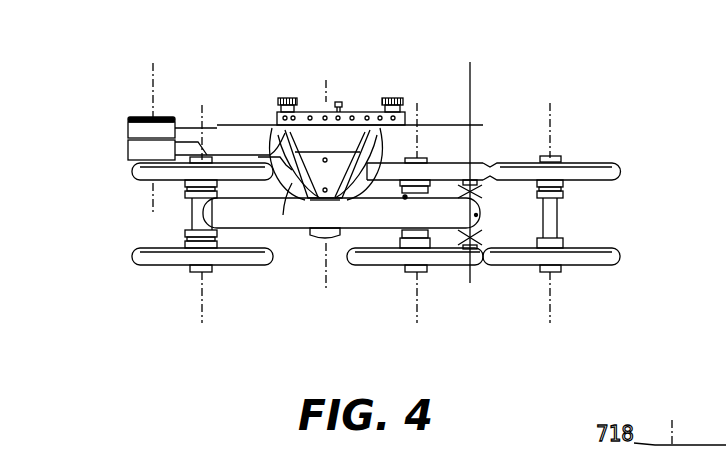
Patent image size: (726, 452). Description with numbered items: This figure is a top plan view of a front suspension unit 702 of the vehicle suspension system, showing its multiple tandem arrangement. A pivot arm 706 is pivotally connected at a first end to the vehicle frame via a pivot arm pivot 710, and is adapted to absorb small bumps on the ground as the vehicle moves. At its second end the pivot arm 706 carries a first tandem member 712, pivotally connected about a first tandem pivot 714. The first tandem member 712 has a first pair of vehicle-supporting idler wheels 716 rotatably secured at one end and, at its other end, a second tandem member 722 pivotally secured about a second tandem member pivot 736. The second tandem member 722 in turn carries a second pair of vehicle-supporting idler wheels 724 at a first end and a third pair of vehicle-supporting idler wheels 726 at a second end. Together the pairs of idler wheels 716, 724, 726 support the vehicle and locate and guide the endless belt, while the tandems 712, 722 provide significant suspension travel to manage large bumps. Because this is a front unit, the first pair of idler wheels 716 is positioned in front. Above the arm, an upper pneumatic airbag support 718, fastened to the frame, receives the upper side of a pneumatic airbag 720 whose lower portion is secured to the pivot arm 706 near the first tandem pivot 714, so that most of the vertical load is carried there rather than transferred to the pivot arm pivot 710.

The suspension unit 702 is at (382, 212).
The pivot arm 706 is at (240, 140).
The pivot arm pivot 710 is at (133, 160).
The first tandem member 712 is at (360, 217).
The first tandem pivot 714 is at (320, 240).
The first pair of vehicle-supporting idler wheels 716 is at (142, 293).
The upper pneumatic airbag support 718 is at (325, 142).
The pneumatic airbag 720 is at (293, 184).
The second tandem member 722 is at (523, 218).
The second pair of vehicle-supporting idler wheels 724 is at (385, 288).
The third pair of vehicle-supporting idler wheels 726 is at (522, 292).
The second tandem member pivot 736 is at (463, 232).